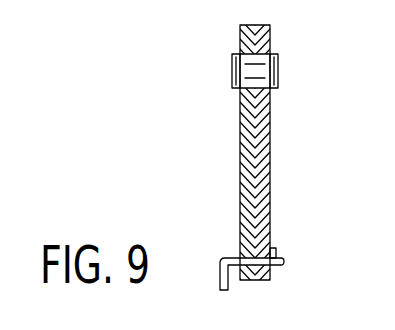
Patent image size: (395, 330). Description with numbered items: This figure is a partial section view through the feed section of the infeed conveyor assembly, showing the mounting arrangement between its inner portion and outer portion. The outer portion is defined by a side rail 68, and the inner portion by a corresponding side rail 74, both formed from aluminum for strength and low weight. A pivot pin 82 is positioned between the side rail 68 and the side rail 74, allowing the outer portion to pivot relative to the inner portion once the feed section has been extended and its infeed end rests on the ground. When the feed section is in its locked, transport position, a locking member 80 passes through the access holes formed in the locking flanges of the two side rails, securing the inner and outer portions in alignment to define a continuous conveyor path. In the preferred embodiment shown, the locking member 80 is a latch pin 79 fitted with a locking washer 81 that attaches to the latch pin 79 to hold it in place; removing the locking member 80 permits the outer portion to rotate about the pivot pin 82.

The side rail 68 is at (245, 163).
The side rail 74 is at (263, 133).
The latch pin 79 is at (220, 270).
The locking member 80 is at (270, 251).
The locking washer 81 is at (273, 268).
The pivot pin 82 is at (260, 72).